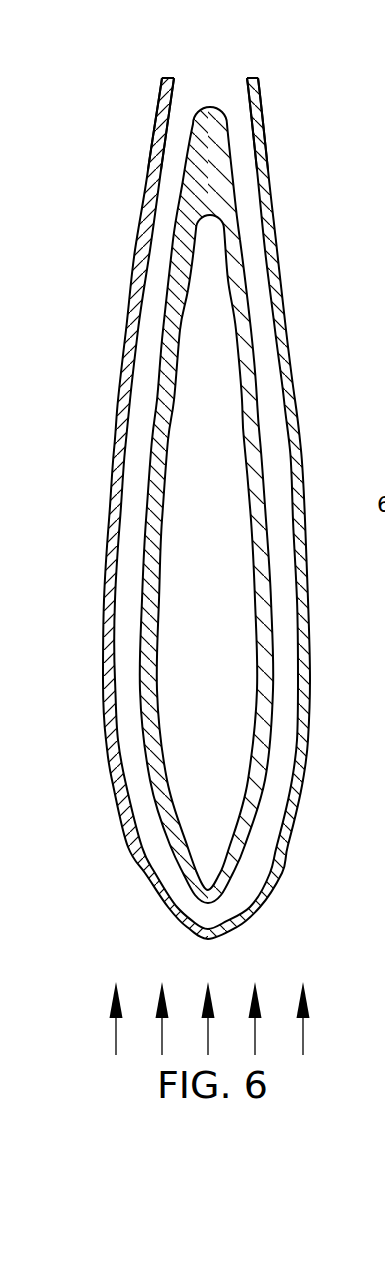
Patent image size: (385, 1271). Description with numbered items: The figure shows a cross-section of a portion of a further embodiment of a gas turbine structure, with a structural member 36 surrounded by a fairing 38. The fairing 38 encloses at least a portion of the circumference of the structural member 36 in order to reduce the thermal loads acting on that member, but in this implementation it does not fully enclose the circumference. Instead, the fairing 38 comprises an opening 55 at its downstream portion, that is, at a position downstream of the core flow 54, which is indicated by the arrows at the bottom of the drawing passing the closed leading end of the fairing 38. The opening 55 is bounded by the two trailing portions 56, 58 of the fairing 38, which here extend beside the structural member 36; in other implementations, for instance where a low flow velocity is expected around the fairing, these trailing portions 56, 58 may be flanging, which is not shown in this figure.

The structural member 36 is at (172, 330).
The fairing 38 is at (135, 255).
The core flow 54 is at (198, 1043).
The opening 55 is at (202, 82).
The trailing portion 56 is at (294, 85).
The trailing portion 58 is at (138, 86).